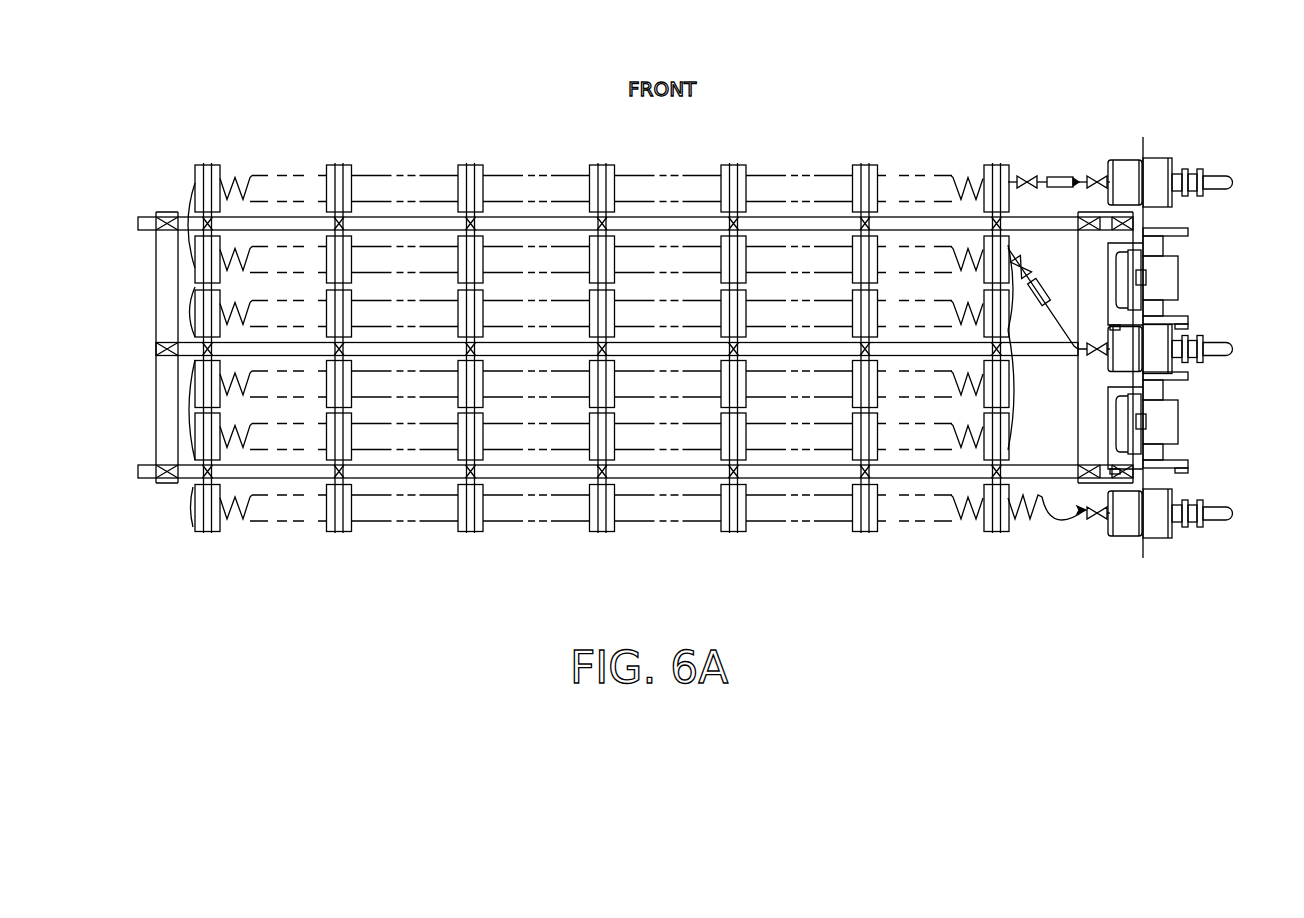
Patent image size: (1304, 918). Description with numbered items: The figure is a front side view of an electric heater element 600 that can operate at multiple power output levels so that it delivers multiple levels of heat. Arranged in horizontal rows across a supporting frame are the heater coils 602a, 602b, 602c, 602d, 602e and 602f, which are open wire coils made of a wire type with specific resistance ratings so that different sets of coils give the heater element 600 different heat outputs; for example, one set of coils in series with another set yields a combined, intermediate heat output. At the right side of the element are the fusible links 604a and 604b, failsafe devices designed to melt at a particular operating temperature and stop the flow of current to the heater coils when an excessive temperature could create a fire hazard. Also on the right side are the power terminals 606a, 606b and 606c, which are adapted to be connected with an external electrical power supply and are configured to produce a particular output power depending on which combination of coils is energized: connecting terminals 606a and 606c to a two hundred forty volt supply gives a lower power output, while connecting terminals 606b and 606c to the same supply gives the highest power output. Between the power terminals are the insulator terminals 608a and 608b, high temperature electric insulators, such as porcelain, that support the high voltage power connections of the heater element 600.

The electric heater element 600 is at (366, 90).
The heater coil 602a is at (268, 175).
The heater coil 602b is at (266, 272).
The heater coil 602c is at (266, 326).
The heater coil 602d is at (266, 397).
The heater coil 602e is at (266, 450).
The heater coil 602f is at (266, 521).
The fusible link 604a is at (1055, 176).
The fusible link 604b is at (1030, 305).
The power terminal 606a is at (1218, 190).
The power terminal 606b is at (1218, 358).
The power terminal 606c is at (1218, 521).
The insulator terminal 608a is at (1163, 282).
The insulator terminal 608b is at (1163, 426).